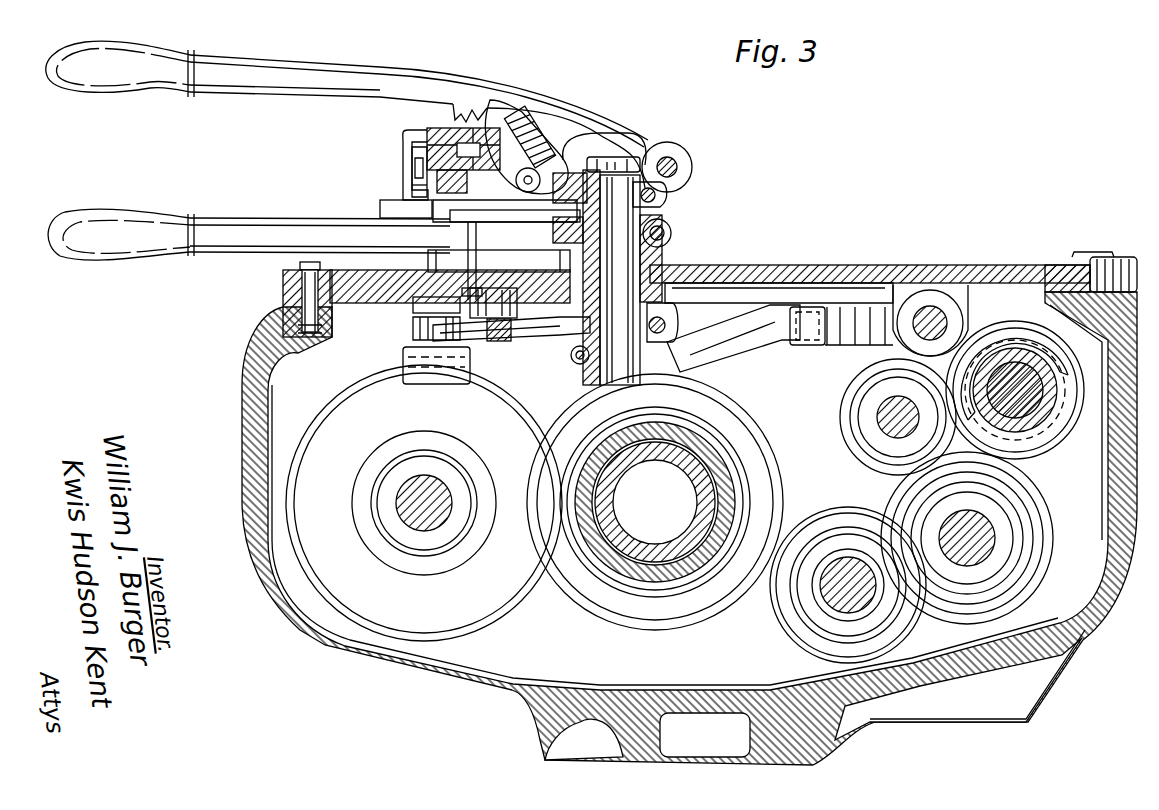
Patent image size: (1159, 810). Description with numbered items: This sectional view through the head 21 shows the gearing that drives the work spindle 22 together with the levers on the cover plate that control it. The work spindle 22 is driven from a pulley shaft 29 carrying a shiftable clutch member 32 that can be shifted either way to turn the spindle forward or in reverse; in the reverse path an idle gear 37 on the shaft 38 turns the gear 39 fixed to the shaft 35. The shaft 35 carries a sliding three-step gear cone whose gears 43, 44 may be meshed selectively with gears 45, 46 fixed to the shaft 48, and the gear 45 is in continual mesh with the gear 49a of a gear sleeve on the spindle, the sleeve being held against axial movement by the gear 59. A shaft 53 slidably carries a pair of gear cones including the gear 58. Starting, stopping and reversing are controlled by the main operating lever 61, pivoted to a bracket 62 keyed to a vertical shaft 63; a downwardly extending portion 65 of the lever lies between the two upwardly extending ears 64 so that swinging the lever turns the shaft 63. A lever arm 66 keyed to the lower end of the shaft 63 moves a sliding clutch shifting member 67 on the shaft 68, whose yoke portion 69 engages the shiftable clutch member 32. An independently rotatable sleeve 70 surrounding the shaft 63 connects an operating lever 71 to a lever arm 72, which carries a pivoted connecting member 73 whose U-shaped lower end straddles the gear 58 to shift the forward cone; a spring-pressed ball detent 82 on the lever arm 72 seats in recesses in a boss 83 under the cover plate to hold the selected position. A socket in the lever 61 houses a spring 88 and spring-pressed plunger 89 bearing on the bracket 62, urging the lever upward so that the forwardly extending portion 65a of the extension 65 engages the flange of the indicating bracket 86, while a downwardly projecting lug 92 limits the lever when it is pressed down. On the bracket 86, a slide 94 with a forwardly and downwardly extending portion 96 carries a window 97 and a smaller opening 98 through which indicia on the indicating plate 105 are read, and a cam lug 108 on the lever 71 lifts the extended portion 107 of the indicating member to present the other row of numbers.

The head 21 is at (440, 672).
The work spindle 22 is at (620, 490).
The pulley shaft 29 is at (1055, 420).
The shiftable clutch member 32 is at (1048, 440).
The shaft 35 is at (966, 566).
The idle gear 37 is at (850, 442).
The shaft 38 is at (878, 417).
The gear 39 is at (1053, 530).
The gear 43 is at (1033, 572).
The gear 44 is at (948, 600).
The gear 45 is at (820, 508).
The gear 46 is at (800, 605).
The shaft 48 is at (832, 608).
The gear 49a is at (730, 592).
The shaft 53 is at (396, 494).
The gear 58 is at (345, 425).
The gear 59 is at (580, 565).
The main operating lever 61 is at (385, 64).
The bracket 62 is at (672, 196).
The vertical shaft 63 is at (655, 262).
The ears 64 is at (607, 155).
The downwardly extending portion 65 is at (572, 120).
The forwardly extending portion 65a is at (500, 201).
The lever arm 66 is at (755, 340).
The sliding clutch shifting member 67 is at (840, 340).
The shaft 68 is at (936, 305).
The yoke portion 69 is at (1008, 332).
The sleeve 70 is at (672, 236).
The operating lever 71 is at (238, 220).
The lever arm 72 is at (540, 340).
The connecting member 73 is at (403, 355).
The spring-pressed ball detent 82 is at (512, 320).
The boss 83 is at (478, 290).
The bracket 86 is at (428, 260).
The spring 88 is at (532, 105).
The spring-pressed plunger 89 is at (605, 133).
The lug 92 is at (448, 106).
The slide 94 is at (478, 128).
The forwardly and downwardly extending portion 96 is at (403, 135).
The window 97 is at (412, 190).
The opening 98 is at (412, 152).
The indicating plate 105 is at (415, 165).
The extended portion 107 is at (425, 203).
The cam lug 108 is at (450, 215).